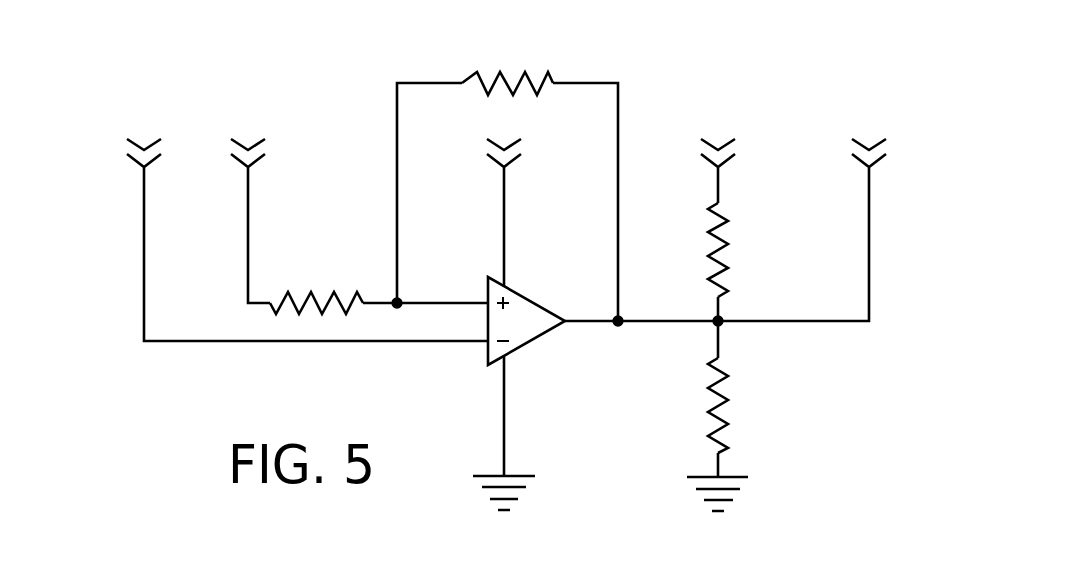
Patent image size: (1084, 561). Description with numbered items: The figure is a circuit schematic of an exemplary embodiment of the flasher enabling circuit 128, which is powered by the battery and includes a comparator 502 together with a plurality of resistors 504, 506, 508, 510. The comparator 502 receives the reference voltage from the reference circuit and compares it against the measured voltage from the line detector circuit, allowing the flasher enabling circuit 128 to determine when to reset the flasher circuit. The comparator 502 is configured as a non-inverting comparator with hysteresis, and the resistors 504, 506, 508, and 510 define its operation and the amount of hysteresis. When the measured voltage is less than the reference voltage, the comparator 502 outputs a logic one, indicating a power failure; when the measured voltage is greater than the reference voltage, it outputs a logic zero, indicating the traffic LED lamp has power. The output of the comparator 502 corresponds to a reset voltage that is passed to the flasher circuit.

The flasher enabling circuit 128 is at (302, 60).
The comparator 502 is at (520, 350).
The resistor 504 is at (330, 293).
The resistor 506 is at (505, 73).
The resistor 508 is at (722, 233).
The resistor 510 is at (720, 415).